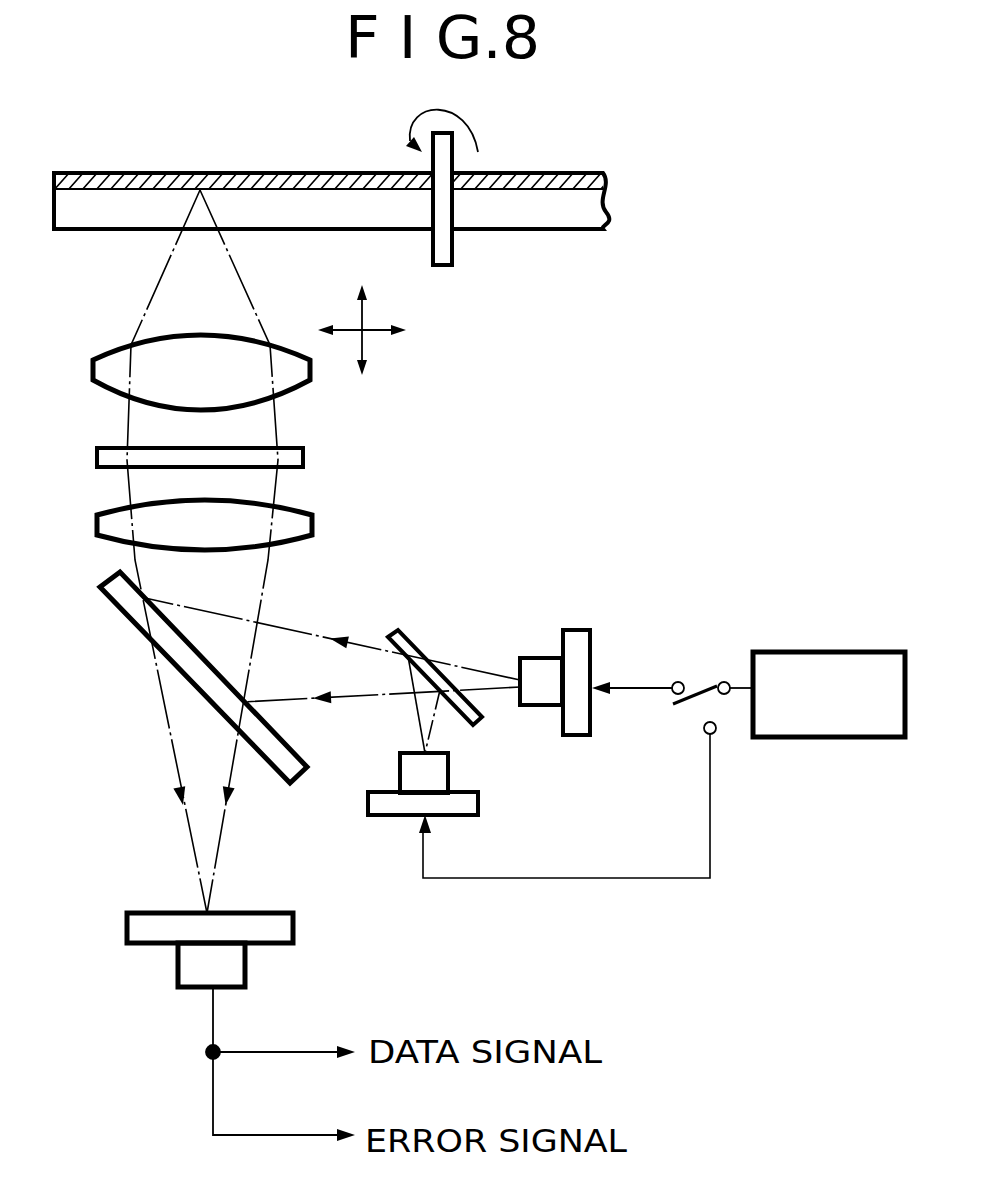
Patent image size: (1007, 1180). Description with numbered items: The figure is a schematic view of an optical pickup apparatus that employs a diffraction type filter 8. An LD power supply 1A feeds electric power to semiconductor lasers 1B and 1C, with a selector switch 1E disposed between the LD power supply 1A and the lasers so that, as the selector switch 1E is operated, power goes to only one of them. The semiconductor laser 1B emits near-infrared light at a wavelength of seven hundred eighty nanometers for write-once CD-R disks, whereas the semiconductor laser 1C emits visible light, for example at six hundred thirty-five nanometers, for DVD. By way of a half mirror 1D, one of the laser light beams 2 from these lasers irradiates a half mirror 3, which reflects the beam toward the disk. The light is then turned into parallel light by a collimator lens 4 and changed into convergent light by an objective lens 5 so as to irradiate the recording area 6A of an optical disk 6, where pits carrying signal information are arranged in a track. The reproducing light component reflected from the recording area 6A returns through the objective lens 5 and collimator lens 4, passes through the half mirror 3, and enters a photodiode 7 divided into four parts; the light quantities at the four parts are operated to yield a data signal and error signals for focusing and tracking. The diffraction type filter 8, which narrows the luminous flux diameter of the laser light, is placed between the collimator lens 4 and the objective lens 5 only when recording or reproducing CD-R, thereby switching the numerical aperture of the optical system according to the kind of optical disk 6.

The LD power supply 1A is at (800, 652).
The semiconductor laser 1B is at (533, 657).
The semiconductor laser 1C is at (450, 770).
The half mirror 1D is at (412, 632).
The selector switch 1E is at (700, 686).
The laser light beams 2 is at (298, 628).
The half mirror 3 is at (118, 596).
The collimator lens 4 is at (312, 526).
The objective lens 5 is at (106, 355).
The optical disk 6 is at (122, 218).
The recording area 6A is at (121, 173).
The photodiode 7 is at (273, 913).
The diffraction type filter 8 is at (305, 456).